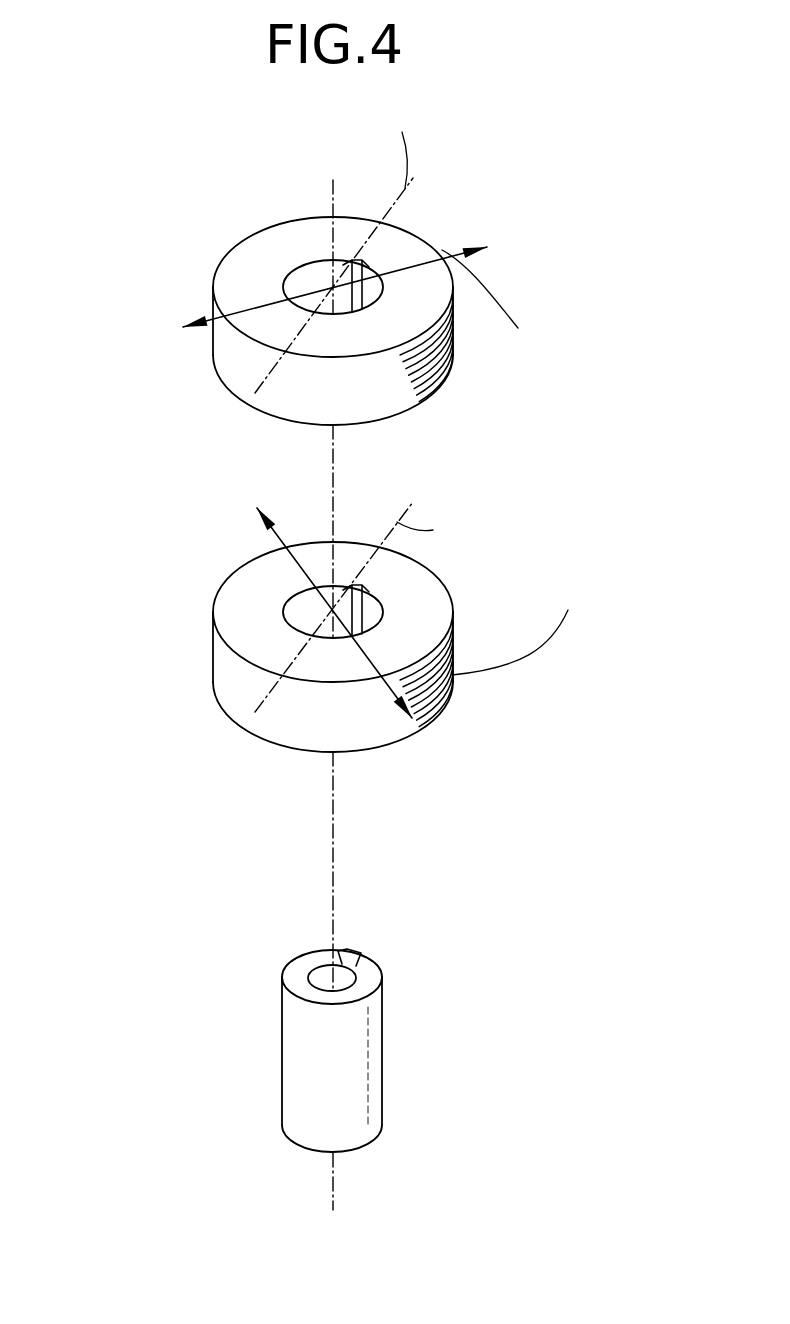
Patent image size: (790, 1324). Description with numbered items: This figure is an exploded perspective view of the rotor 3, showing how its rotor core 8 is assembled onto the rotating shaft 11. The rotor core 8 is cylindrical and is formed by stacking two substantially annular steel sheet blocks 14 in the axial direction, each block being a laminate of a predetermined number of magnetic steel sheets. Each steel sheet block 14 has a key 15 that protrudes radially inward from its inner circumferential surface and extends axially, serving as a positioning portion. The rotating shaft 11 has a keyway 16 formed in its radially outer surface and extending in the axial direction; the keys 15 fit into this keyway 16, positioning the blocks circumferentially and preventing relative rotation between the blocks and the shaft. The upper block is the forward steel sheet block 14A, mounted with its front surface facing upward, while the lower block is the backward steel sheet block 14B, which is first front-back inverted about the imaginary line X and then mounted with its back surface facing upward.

The rotor 3 is at (492, 213).
The rotor core 8 is at (72, 388).
The rotating shaft 11 is at (380, 1088).
The steel sheet block 14 is at (362, 425).
The forward steel sheet block 14A is at (230, 362).
The backward steel sheet block 14B is at (230, 678).
The key 15 is at (343, 263).
The keyway 16 is at (357, 958).